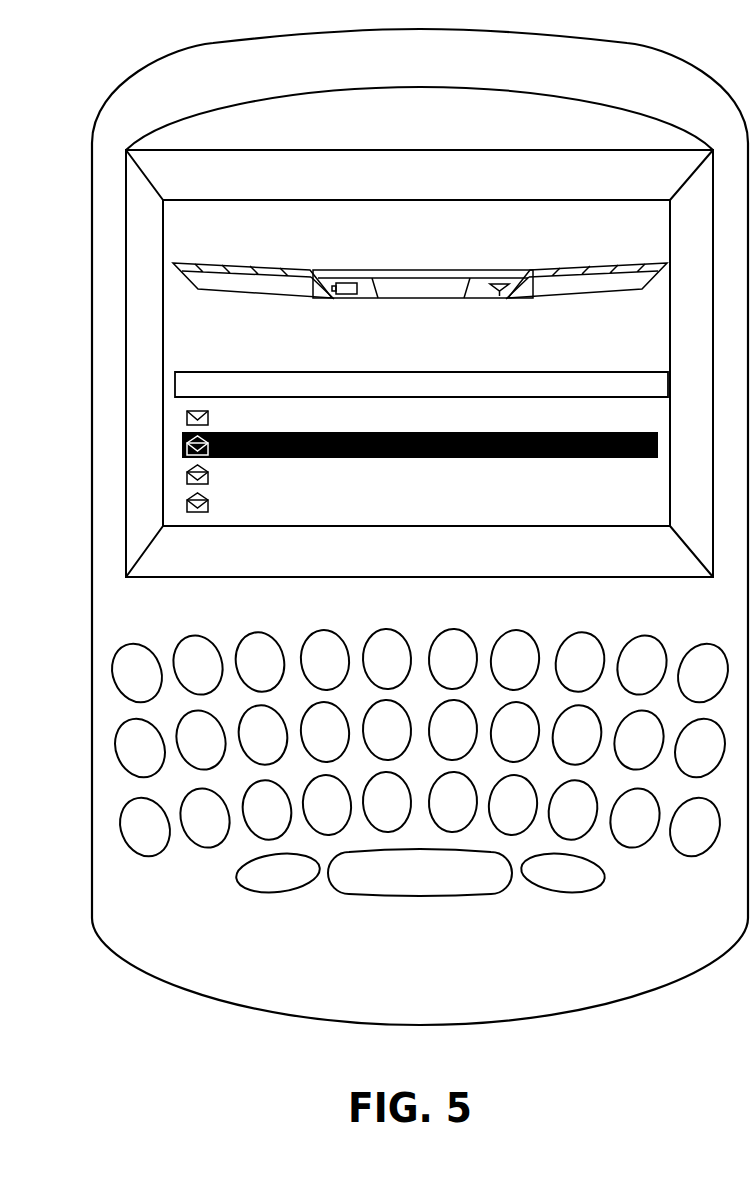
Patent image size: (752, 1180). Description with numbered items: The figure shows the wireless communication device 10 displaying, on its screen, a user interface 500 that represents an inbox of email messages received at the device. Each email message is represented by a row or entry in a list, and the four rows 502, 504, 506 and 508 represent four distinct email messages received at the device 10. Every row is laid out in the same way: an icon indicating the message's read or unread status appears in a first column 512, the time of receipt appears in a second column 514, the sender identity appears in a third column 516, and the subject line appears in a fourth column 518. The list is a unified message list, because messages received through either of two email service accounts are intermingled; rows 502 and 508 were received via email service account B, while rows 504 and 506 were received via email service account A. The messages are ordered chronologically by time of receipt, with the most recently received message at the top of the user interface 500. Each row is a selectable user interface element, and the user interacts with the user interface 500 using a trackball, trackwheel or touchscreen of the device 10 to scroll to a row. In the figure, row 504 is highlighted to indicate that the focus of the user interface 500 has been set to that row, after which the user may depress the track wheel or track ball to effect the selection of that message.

The device 10 is at (598, 43).
The user interface 500 is at (190, 235).
The row 502 is at (182, 418).
The row 504 is at (182, 447).
The row 506 is at (182, 476).
The row 508 is at (182, 504).
The first column 512 is at (197, 394).
The second column 514 is at (244, 394).
The third column 516 is at (339, 394).
The fourth column 518 is at (561, 394).